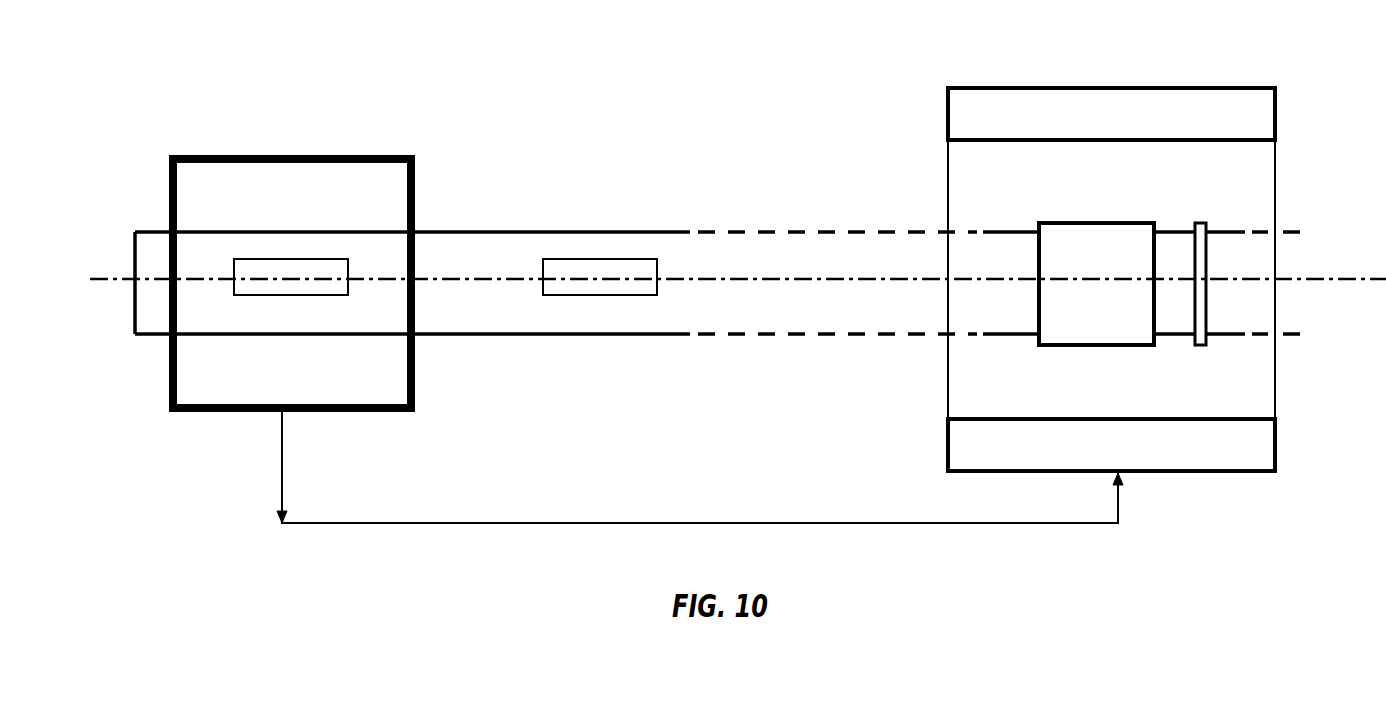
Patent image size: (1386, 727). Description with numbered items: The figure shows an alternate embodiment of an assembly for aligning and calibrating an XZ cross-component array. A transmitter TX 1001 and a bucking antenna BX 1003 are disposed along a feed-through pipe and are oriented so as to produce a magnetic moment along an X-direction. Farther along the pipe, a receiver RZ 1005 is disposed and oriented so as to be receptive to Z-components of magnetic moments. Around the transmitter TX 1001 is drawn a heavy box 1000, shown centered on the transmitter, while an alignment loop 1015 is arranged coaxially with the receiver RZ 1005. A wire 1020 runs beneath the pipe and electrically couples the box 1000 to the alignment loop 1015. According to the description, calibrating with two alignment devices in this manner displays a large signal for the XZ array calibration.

The transmitter housing 1000 is at (330, 156).
The transmitter TX 1001 is at (265, 270).
The bucking antenna BX 1003 is at (627, 270).
The alignment loop 1015 is at (1188, 98).
The receiver RZ 1005 is at (1126, 316).
The wire 1020 is at (892, 523).